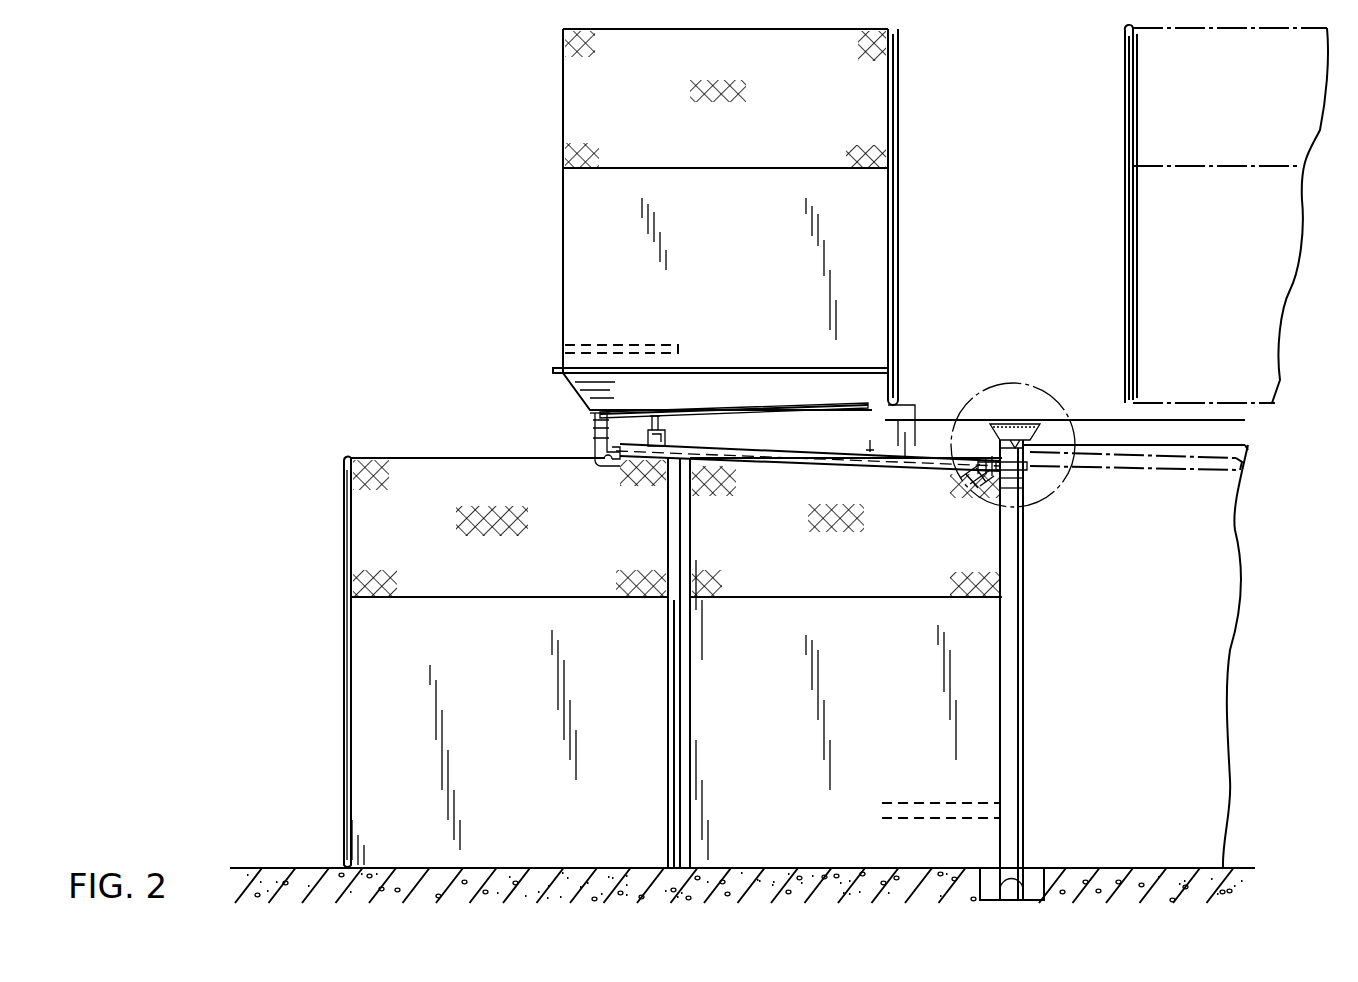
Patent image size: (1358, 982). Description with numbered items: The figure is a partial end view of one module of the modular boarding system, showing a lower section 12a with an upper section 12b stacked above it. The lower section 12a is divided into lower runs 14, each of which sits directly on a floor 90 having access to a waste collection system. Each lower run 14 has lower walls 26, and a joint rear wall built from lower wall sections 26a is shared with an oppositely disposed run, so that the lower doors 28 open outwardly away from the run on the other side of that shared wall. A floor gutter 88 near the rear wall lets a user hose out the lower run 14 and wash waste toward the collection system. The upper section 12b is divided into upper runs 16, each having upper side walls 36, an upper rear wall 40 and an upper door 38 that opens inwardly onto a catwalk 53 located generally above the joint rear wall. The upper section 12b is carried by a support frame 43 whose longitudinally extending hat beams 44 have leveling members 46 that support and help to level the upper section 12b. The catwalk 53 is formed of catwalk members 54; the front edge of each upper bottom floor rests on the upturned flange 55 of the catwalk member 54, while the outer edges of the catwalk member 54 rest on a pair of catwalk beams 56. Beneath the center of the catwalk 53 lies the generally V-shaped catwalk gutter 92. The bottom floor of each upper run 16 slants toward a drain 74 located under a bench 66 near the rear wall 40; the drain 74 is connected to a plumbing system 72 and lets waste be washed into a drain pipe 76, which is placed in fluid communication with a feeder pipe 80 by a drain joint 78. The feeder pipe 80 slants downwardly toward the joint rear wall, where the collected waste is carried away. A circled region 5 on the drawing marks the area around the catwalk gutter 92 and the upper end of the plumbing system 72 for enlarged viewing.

The detail view of FIG. 5 is at (1062, 480).
The lower section 12a is at (320, 704).
The upper section 12b is at (511, 269).
The lower run 14 is at (472, 458).
The upper run 16 is at (563, 198).
The lower wall 26 is at (378, 797).
The lower wall section 26a is at (846, 664).
The lower door 28 is at (342, 660).
The upper side wall 36 is at (725, 227).
The upper door 38 is at (900, 168).
The upper rear wall 40 is at (562, 303).
The support frame 43 is at (838, 448).
The hat beam 44 is at (668, 440).
The leveling member 46 is at (634, 440).
The catwalk 53 is at (948, 420).
The catwalk member 54 is at (916, 418).
The upturned flange 55 is at (876, 438).
The catwalk beam 56 is at (906, 434).
The bench 66 is at (638, 344).
The plumbing system 72 is at (1048, 514).
The drain 74 is at (596, 414).
The drain pipe 76 is at (592, 430).
The drain joint 78 is at (590, 456).
The feeder pipe 80 is at (1122, 484).
The floor gutter 88 is at (1032, 870).
The floor 90 is at (834, 868).
The catwalk gutter 92 is at (1040, 432).